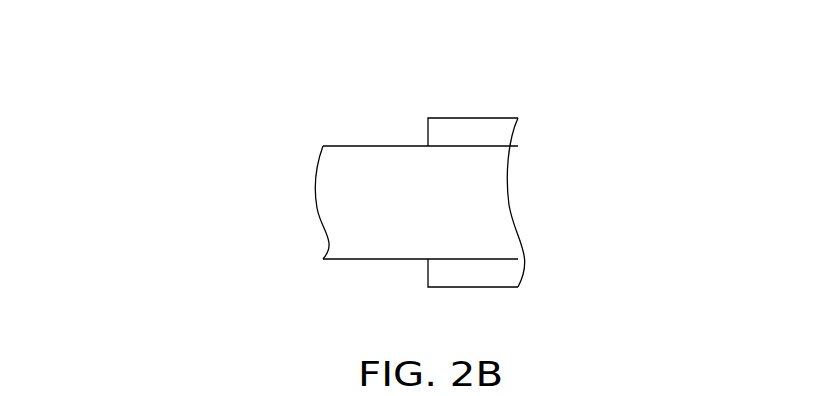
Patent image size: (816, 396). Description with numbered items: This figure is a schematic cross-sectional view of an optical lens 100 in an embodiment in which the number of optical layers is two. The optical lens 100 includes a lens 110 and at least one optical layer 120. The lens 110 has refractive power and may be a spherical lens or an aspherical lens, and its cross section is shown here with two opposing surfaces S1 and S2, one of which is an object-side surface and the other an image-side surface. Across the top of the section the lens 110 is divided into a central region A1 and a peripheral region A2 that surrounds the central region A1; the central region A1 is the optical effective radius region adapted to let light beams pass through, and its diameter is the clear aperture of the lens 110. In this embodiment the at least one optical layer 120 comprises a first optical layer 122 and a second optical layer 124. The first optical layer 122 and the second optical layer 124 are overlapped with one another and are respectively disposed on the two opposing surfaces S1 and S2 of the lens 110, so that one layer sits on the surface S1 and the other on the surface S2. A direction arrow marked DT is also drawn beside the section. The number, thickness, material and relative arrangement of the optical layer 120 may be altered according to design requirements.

The optical lens 100 is at (676, 299).
The lens 110 is at (503, 197).
The optical layer 120 is at (130, 105).
The first optical layer 122 is at (503, 132).
The second optical layer 124 is at (503, 274).
The surface S1 is at (364, 146).
The surface S2 is at (364, 260).
The central region A1 is at (428, 66).
The peripheral region A2 is at (520, 78).
The thickness direction DT is at (233, 63).